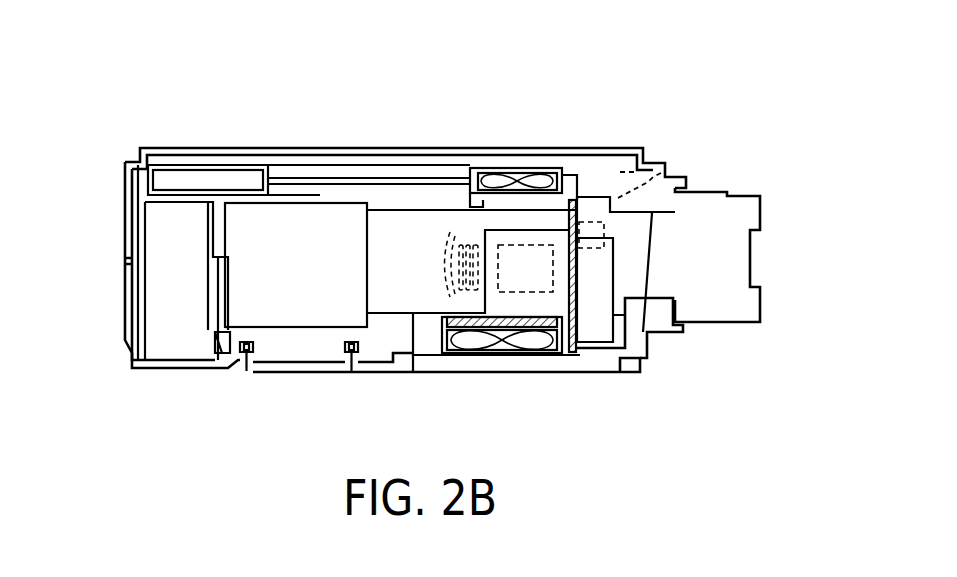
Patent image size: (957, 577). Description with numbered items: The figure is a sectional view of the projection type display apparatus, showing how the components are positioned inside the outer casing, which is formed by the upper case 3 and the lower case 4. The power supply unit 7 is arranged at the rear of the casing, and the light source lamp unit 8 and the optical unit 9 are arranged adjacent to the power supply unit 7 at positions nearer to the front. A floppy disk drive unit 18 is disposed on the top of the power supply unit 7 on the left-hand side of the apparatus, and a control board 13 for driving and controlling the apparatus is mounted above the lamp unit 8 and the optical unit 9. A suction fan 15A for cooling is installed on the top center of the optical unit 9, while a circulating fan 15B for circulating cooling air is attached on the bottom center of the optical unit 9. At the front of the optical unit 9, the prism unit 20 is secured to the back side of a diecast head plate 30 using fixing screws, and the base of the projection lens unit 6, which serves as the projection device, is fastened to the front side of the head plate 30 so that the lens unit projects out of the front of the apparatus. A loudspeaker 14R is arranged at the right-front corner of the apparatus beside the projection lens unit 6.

The upper case 3 is at (168, 148).
The lower case 4 is at (165, 370).
The projection lens unit 6 is at (754, 191).
The power supply unit 7 is at (163, 291).
The light source lamp unit 8 is at (263, 248).
The optical unit 9 is at (393, 206).
The control board 13 is at (305, 173).
The loudspeaker 14R is at (666, 176).
The suction fan 15A is at (508, 165).
The circulating fan 15B is at (485, 345).
The floppy disk drive unit 18 is at (168, 180).
The prism unit 20 is at (526, 262).
The head plate 30 is at (594, 188).